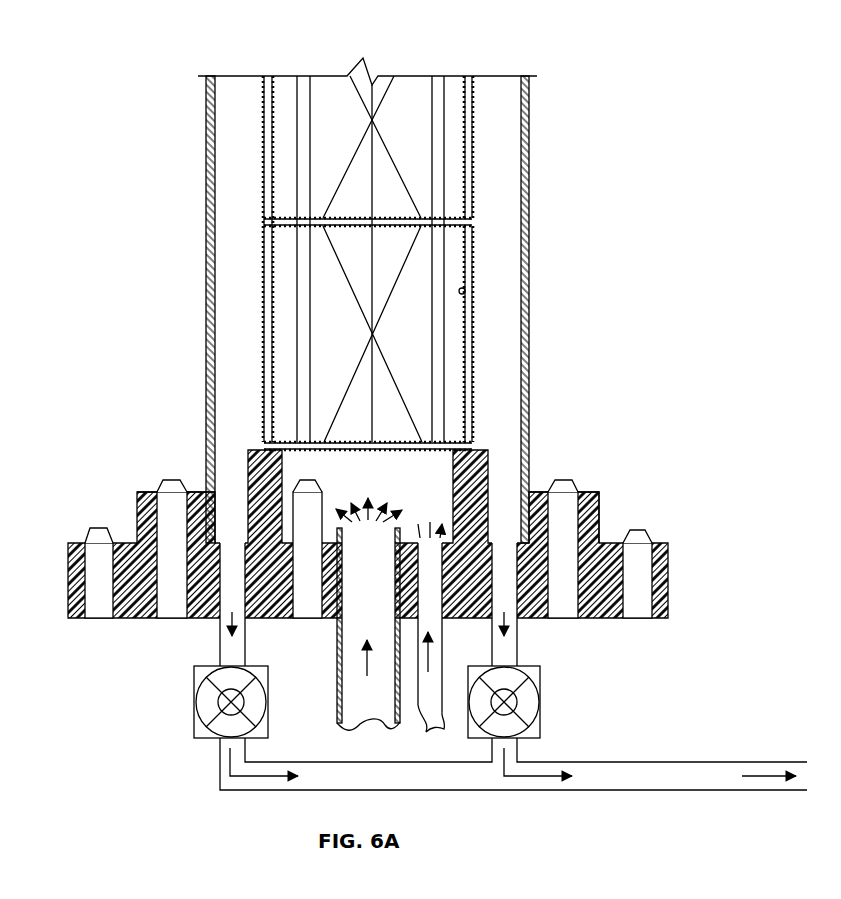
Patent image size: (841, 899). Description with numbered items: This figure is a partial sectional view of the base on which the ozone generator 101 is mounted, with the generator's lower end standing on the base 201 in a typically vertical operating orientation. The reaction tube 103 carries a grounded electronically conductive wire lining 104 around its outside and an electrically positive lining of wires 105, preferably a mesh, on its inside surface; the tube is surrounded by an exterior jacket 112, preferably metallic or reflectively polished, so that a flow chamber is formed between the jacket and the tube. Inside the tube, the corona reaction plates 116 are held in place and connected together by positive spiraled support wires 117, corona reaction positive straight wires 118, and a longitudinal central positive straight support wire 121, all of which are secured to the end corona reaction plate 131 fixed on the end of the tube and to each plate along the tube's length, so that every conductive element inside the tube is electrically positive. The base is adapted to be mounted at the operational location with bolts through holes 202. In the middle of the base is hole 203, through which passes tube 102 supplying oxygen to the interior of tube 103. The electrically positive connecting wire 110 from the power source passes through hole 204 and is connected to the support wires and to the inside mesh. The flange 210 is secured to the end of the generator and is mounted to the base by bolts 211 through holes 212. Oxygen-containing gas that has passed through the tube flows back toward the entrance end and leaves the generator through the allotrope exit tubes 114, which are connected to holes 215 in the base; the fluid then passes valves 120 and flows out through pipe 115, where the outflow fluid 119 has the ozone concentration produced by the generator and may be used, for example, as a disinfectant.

The ozone generator 101 is at (542, 264).
The tube 102 is at (353, 683).
The tube 103 is at (473, 243).
The electronically conductive wire lining 104 is at (473, 196).
The electrically positive lining of wires 105 is at (465, 291).
The connecting wire 110 is at (434, 722).
The jacket 112 is at (207, 246).
The tubes 114 is at (218, 641).
The pipe 115 is at (615, 762).
The corona reaction plates 116 is at (353, 217).
The spiraled support wires 117 is at (395, 158).
The corona reaction positive straight wires 118 is at (311, 102).
The outflow fluid 119 is at (775, 762).
The valve 120 is at (194, 733).
The longitudinal central positive straight support wire 121 is at (372, 187).
The corona reaction plate 131 is at (353, 440).
The base 201 is at (605, 541).
The holes 202 is at (99, 610).
The hole 203 is at (343, 566).
The hole 204 is at (440, 567).
The flange 210 is at (600, 501).
The bolts 211 is at (563, 481).
The holes 212 is at (565, 608).
The holes 215 is at (231, 553).